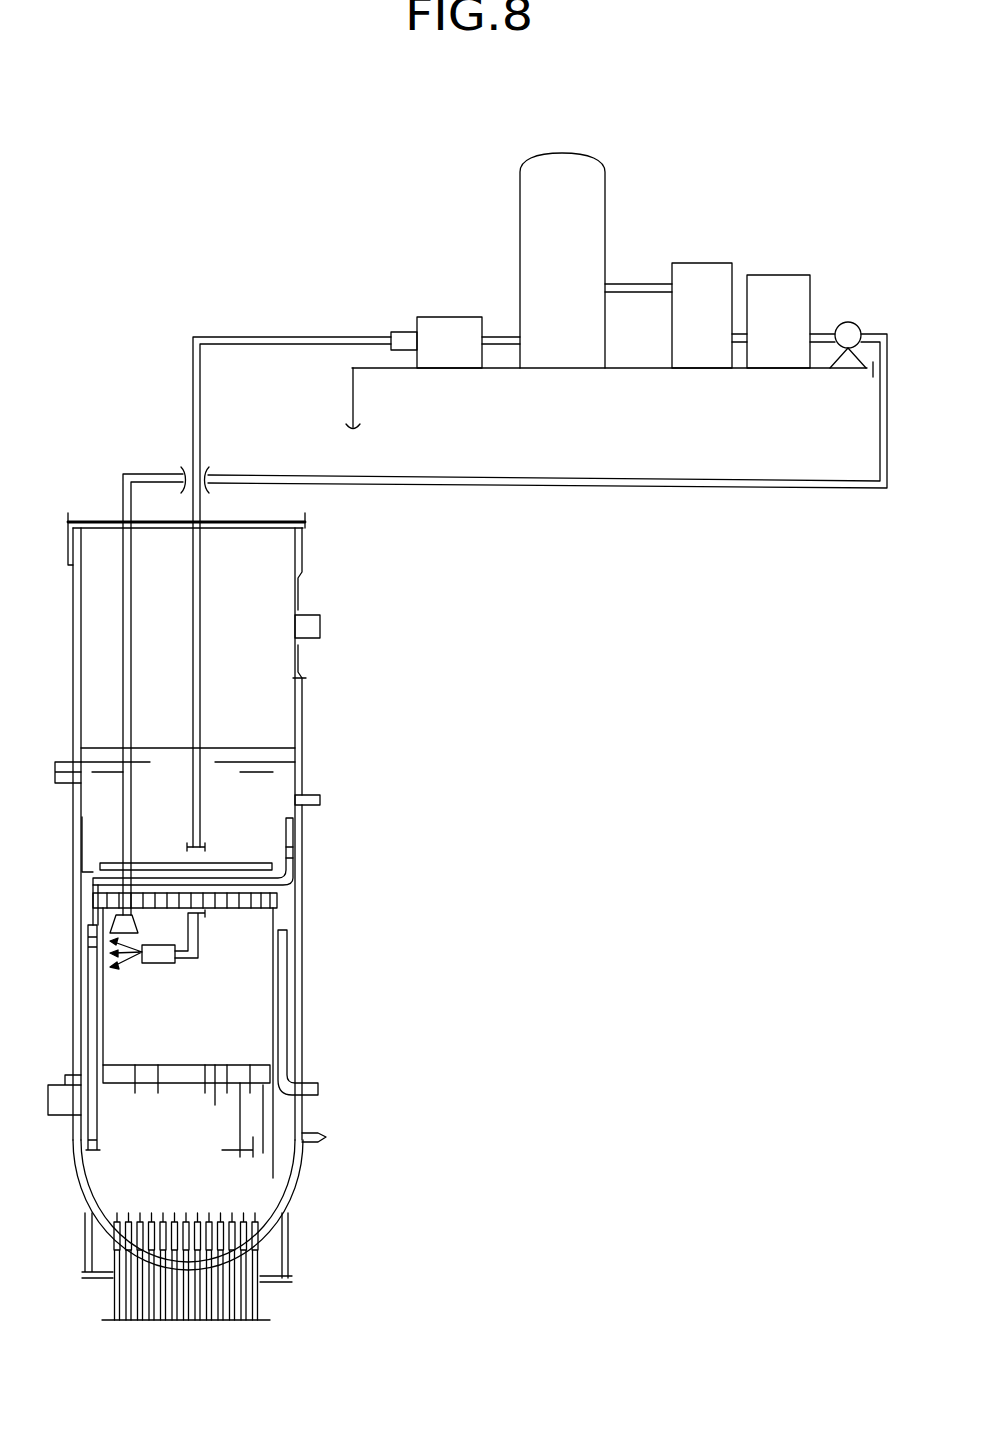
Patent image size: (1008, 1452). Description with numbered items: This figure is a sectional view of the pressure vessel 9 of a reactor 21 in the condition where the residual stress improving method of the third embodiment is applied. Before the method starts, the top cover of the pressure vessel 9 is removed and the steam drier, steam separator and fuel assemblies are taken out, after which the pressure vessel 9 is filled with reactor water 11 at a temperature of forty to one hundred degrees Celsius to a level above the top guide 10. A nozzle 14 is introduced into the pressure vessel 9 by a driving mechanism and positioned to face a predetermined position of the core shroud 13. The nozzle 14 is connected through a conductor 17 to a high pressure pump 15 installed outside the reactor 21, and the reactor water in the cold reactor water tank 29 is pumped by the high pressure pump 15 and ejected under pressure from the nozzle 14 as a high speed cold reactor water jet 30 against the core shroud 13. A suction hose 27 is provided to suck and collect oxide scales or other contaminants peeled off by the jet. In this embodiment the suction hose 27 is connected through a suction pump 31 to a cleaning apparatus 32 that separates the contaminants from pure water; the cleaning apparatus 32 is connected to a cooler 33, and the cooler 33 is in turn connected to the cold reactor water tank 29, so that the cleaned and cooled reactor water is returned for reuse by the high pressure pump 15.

The pressure vessel 9 is at (303, 708).
The top guide 10 is at (222, 910).
The reactor water 11 is at (153, 762).
The core shroud 13 is at (102, 1040).
The nozzle 14 is at (165, 964).
The high pressure pump 15 is at (460, 328).
The conductor 17 is at (200, 623).
The reactor 21 is at (323, 853).
The suction hose 27 is at (131, 586).
The cold reactor water tank 29 is at (585, 227).
The high speed cold reactor water jet 30 is at (128, 966).
The suction pump 31 is at (848, 328).
The cleaning apparatus 32 is at (793, 290).
The cooler 33 is at (698, 278).